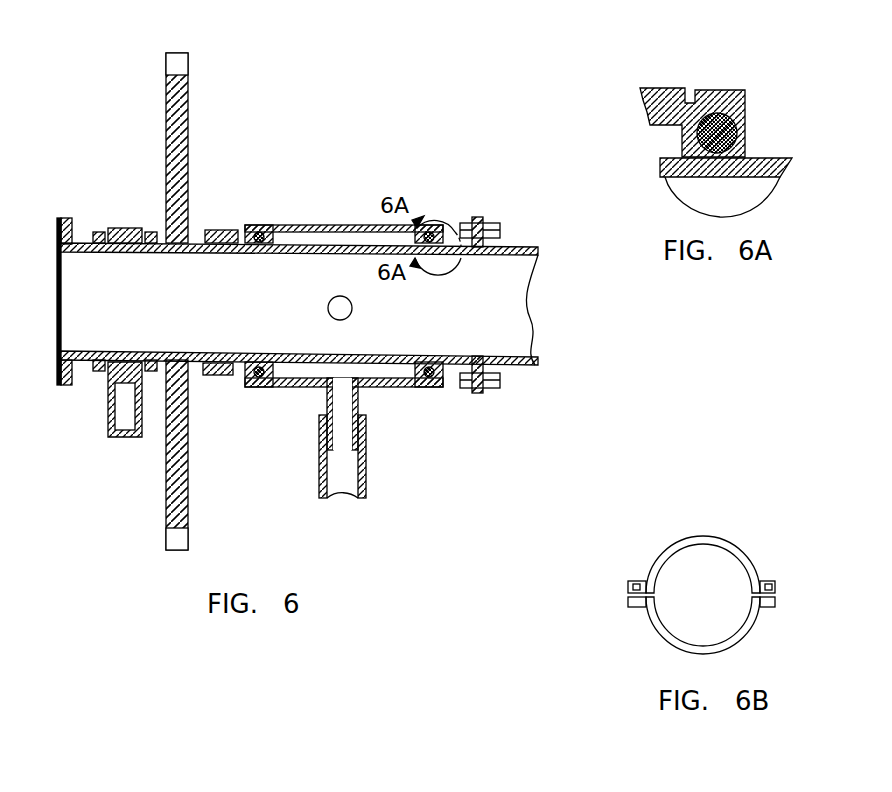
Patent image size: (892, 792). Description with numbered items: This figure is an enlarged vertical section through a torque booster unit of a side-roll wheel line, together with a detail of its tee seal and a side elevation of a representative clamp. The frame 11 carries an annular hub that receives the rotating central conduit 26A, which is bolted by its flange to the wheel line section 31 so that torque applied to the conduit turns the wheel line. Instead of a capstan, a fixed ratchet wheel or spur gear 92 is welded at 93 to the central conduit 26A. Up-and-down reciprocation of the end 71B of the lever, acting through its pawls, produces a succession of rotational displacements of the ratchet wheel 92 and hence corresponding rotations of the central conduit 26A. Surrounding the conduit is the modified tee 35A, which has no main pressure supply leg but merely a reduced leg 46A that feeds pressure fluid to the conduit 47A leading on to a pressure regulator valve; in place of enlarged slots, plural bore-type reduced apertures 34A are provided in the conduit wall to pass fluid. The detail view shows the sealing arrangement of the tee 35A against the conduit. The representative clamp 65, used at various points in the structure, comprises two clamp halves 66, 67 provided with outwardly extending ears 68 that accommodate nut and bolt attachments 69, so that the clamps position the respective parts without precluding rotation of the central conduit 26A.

In FIG. 6, the frame 11 is at (108, 425).
In FIG. 6, the central conduit 26A is at (280, 365).
In FIG. 6, the wheel line section 31 is at (527, 247).
In FIG. 6, the bore-type reduced aperture 34A is at (352, 312).
In FIG. 6, the tee 35A is at (312, 224).
In FIG. 6A, the tee 35A is at (660, 88).
In FIG. 6, the reduced leg 46A is at (358, 402).
In FIG. 6, the conduit 47A is at (366, 490).
In FIG. 6B, the clamp 65 is at (673, 576).
In FIG. 6B, the clamp half 66 is at (677, 548).
In FIG. 6B, the clamp half 67 is at (658, 630).
In FIG. 6B, the outwardly extending ear 68 is at (628, 590).
In FIG. 6B, the nut and bolt attachment 69 is at (633, 582).
In FIG. 6, the lever end 71B is at (215, 372).
In FIG. 6, the ratchet wheel or spur gear 92 is at (185, 138).
In FIG. 6, the weld 93 is at (197, 241).